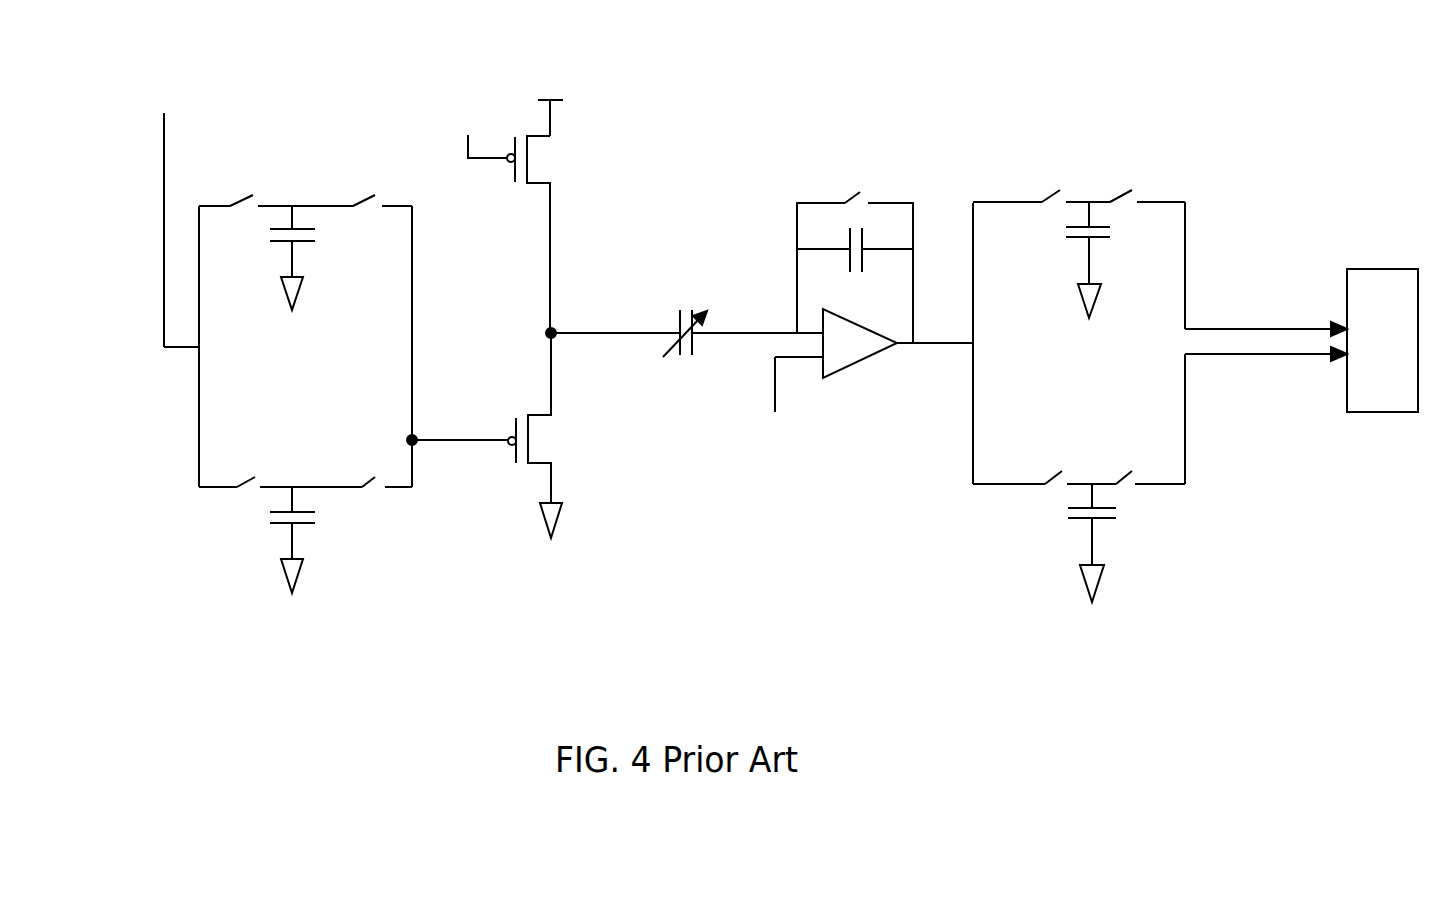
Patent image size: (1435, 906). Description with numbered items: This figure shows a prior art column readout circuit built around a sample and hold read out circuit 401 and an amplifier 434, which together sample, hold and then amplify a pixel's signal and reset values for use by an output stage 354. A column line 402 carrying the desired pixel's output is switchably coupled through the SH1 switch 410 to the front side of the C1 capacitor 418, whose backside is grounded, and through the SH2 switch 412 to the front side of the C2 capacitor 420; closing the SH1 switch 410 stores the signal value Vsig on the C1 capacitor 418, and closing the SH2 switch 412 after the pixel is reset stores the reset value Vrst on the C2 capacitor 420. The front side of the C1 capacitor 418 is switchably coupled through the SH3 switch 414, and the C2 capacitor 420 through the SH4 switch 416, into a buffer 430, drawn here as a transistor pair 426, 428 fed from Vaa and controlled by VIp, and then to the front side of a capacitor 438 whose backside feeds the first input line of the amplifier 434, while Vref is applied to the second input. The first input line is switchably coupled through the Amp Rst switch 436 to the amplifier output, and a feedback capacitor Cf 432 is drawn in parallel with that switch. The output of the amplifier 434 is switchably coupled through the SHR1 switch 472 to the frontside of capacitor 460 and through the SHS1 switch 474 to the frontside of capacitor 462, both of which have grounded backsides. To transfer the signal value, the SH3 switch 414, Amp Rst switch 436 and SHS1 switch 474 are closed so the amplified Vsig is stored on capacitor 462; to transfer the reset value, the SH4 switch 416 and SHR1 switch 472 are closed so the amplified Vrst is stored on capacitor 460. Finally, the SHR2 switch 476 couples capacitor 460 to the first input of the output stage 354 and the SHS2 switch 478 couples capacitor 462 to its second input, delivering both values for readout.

The sample and hold read out circuit 401 is at (122, 107).
The column line 402 is at (172, 160).
The SH1 switch 410 is at (257, 195).
The SH3 switch 414 is at (382, 195).
The C1 capacitor 418 is at (317, 240).
The SH2 switch 412 is at (262, 477).
The SH4 switch 416 is at (407, 453).
The C2 capacitor 420 is at (318, 522).
The buffer 430 is at (597, 100).
The PMOS transistor 426 is at (552, 158).
The NMOS transistor 428 is at (548, 438).
The capacitor 438 is at (698, 340).
The Amp Rst switch 436 is at (880, 192).
The feedback capacitor Cf 432 is at (872, 248).
The amplifier 434 is at (865, 372).
The SHR1 switch 472 is at (1065, 193).
The SHR2 switch 476 is at (1137, 193).
The capacitor 460 is at (1103, 237).
The SHS1 switch 474 is at (1068, 472).
The SHS2 switch 478 is at (1127, 482).
The capacitor 462 is at (1110, 530).
The output stage 354 is at (1301, 340).